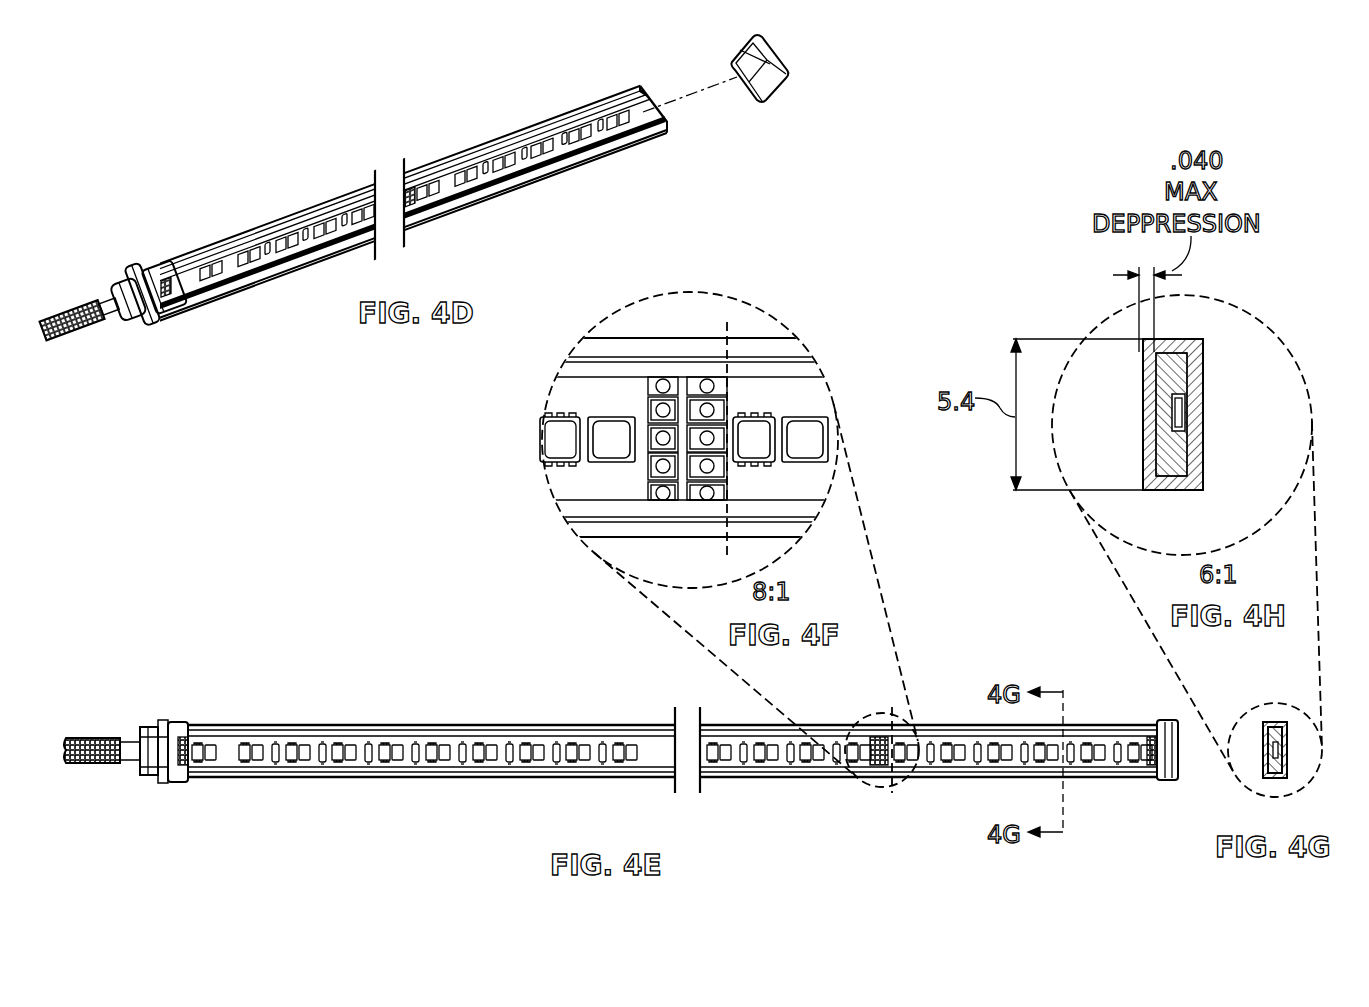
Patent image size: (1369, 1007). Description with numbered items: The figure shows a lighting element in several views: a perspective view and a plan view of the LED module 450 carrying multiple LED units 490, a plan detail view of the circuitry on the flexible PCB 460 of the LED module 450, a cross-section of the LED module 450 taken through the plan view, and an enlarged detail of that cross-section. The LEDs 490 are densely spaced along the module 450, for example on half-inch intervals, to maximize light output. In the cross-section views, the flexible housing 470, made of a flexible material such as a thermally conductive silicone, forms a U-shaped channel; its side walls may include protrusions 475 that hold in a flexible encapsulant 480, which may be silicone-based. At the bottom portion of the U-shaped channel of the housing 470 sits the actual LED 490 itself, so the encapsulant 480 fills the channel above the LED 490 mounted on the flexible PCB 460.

In FIG. 4D, the LED module 450 is at (557, 112).
In FIG. 4E, the LED module 450 is at (430, 725).
In FIG. 4F, the LED module 450 is at (702, 335).
In FIG. 4H, the LED module 450 is at (1103, 279).
In FIG. 4F, the flexible PCB 460 is at (588, 395).
In FIG. 4H, the flexible housing 470 is at (1197, 359).
In FIG. 4H, the protrusions 475 is at (1168, 353).
In FIG. 4H, the flexible encapsulant 480 is at (1154, 411).
In FIG. 4D, the LED 490 is at (540, 153).
In FIG. 4E, the LED 490 is at (1037, 748).
In FIG. 4H, the LED 490 is at (1184, 419).